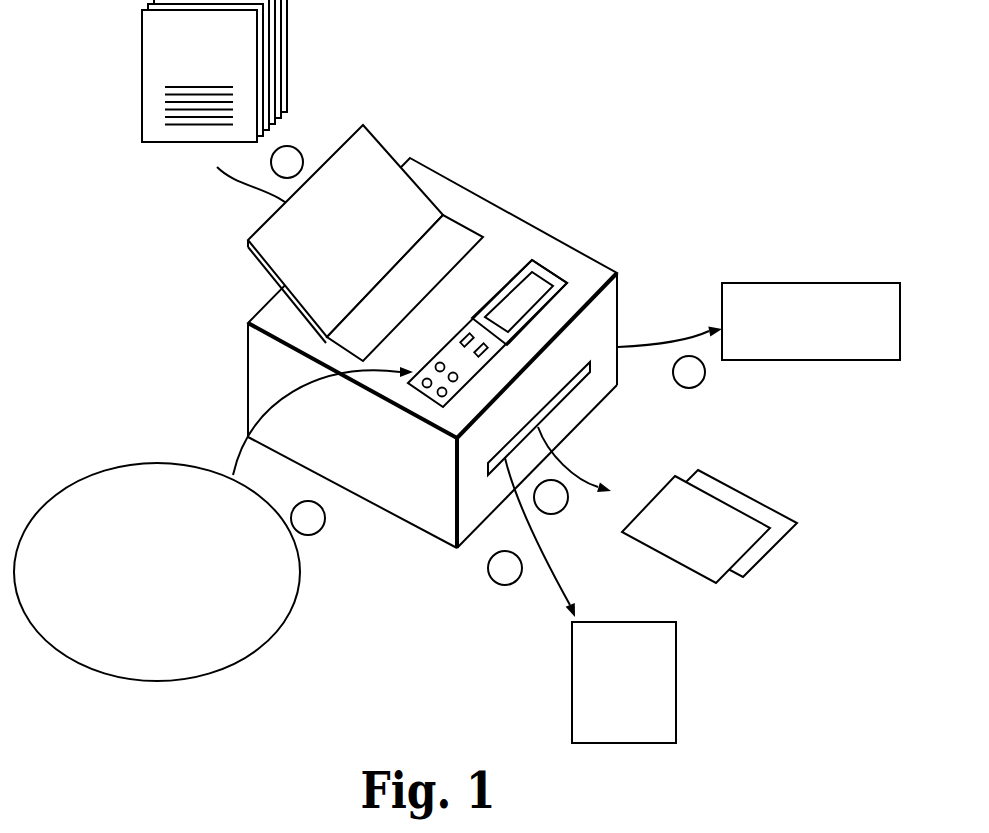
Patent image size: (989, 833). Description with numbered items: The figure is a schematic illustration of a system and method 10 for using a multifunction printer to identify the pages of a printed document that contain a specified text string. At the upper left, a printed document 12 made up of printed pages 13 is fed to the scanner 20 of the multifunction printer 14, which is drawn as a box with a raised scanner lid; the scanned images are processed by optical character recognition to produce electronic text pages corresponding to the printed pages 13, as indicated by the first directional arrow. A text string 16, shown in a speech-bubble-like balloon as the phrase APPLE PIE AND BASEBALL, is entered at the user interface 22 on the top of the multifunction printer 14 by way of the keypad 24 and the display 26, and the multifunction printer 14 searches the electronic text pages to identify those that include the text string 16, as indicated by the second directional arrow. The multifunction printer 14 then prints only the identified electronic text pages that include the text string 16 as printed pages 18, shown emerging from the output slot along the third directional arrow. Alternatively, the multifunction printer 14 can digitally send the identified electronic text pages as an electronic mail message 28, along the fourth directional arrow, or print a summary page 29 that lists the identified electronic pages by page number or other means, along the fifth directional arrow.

The system and method 10 is at (672, 118).
The printed document 12 is at (175, 101).
The printed pages 13 is at (162, 142).
The multifunction printer 14 is at (557, 222).
The text string 16 is at (257, 647).
The printed pages 18 is at (720, 567).
The scanner 20 is at (466, 226).
The user interface 22 is at (535, 406).
The keypad 24 is at (430, 396).
The display 26 is at (538, 272).
The electronic mail message 28 is at (813, 362).
The summary page 29 is at (676, 687).